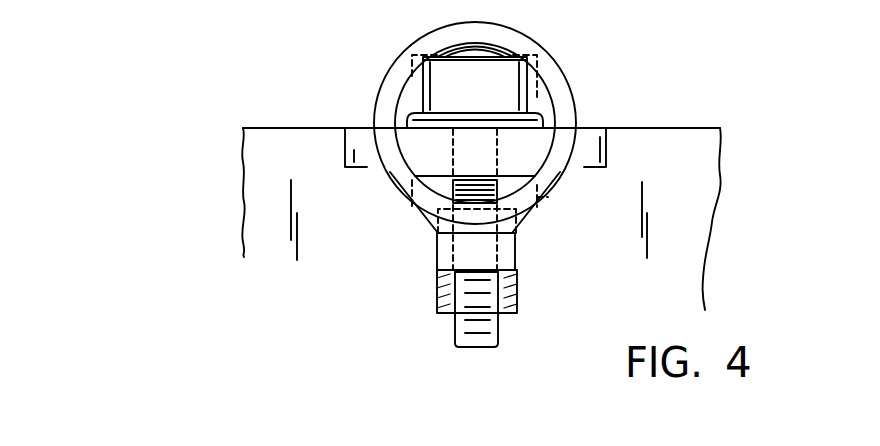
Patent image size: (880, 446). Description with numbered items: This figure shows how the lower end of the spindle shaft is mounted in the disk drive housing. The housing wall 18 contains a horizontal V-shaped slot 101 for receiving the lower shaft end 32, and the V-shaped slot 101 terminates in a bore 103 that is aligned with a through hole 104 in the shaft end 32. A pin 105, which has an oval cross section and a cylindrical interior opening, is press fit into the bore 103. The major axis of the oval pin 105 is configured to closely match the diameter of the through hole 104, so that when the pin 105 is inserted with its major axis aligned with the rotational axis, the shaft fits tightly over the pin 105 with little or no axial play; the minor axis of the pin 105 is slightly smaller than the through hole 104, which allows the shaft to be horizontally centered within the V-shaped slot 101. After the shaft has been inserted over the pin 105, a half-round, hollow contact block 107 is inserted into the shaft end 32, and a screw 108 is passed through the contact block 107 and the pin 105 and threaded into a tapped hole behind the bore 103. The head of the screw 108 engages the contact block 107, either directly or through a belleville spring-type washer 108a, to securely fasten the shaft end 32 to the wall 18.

The housing wall 18 is at (258, 178).
The lower shaft end 32 is at (388, 90).
The V-shaped slot 101 is at (360, 128).
The bore 103 is at (437, 253).
The through hole 104 is at (541, 61).
The pin 105 is at (500, 247).
The contact block 107 is at (420, 142).
The screw 108 is at (463, 88).
The belleville spring-type washer 108a is at (537, 113).